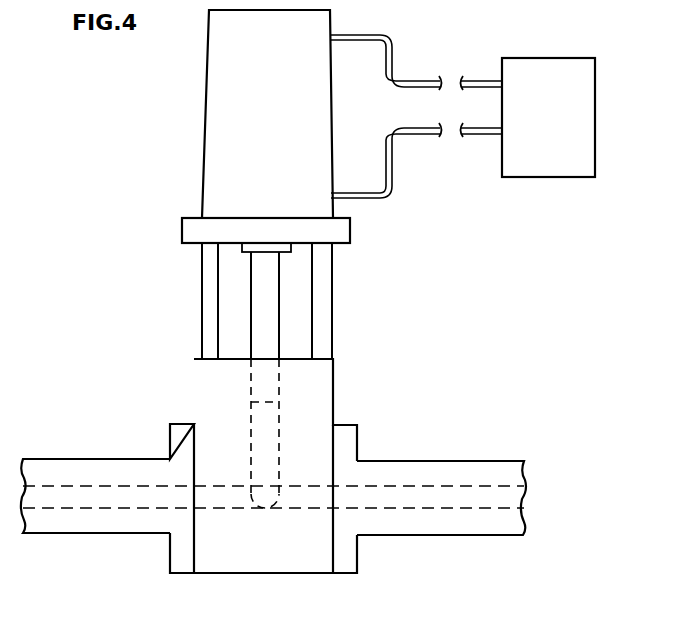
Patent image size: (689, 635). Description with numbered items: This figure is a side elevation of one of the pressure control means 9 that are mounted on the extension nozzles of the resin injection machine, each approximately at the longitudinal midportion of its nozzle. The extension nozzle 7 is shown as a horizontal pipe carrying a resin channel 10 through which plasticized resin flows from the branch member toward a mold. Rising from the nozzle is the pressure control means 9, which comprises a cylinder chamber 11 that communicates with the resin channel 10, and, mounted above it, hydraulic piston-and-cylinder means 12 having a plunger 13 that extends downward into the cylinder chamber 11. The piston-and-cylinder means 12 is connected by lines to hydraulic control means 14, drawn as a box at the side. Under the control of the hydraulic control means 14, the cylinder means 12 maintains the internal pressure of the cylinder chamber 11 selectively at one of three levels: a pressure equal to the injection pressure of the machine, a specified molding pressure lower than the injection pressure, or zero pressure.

The extension nozzle 7 is at (88, 527).
The pressure control means 9 is at (182, 381).
The resin channel 10 is at (415, 492).
The cylinder chamber 11 is at (280, 452).
The hydraulic piston-and-cylinder means 12 is at (223, 162).
The plunger 13 is at (268, 306).
The hydraulic control means 14 is at (558, 128).